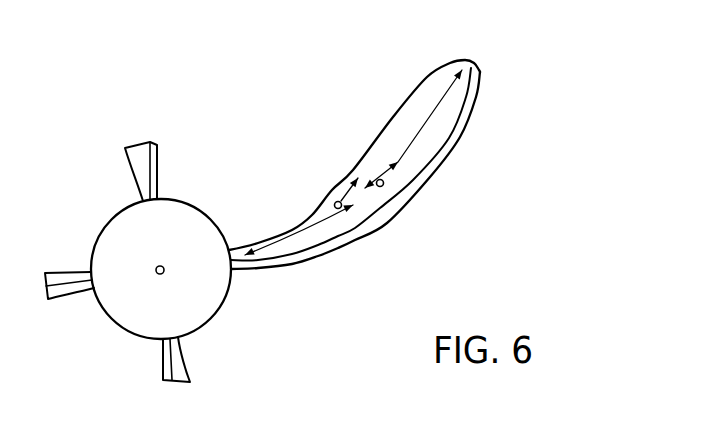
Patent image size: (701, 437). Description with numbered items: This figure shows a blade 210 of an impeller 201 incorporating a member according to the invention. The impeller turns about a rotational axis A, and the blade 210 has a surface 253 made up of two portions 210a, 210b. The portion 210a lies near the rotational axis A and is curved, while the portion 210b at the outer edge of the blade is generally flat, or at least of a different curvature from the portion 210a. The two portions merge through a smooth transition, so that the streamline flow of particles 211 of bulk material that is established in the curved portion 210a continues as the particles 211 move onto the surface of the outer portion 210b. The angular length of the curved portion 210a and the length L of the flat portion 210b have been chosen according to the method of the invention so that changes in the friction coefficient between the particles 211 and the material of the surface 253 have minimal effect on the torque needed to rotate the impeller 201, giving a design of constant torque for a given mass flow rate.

The impeller 201 is at (458, 230).
The blade 210 is at (430, 103).
The blade portion 210a is at (286, 242).
The blade portion 210b is at (482, 72).
The surface 253 is at (380, 125).
The particles 211 is at (379, 187).
The length of portion 210b L is at (415, 130).
The rotational axis A is at (157, 275).